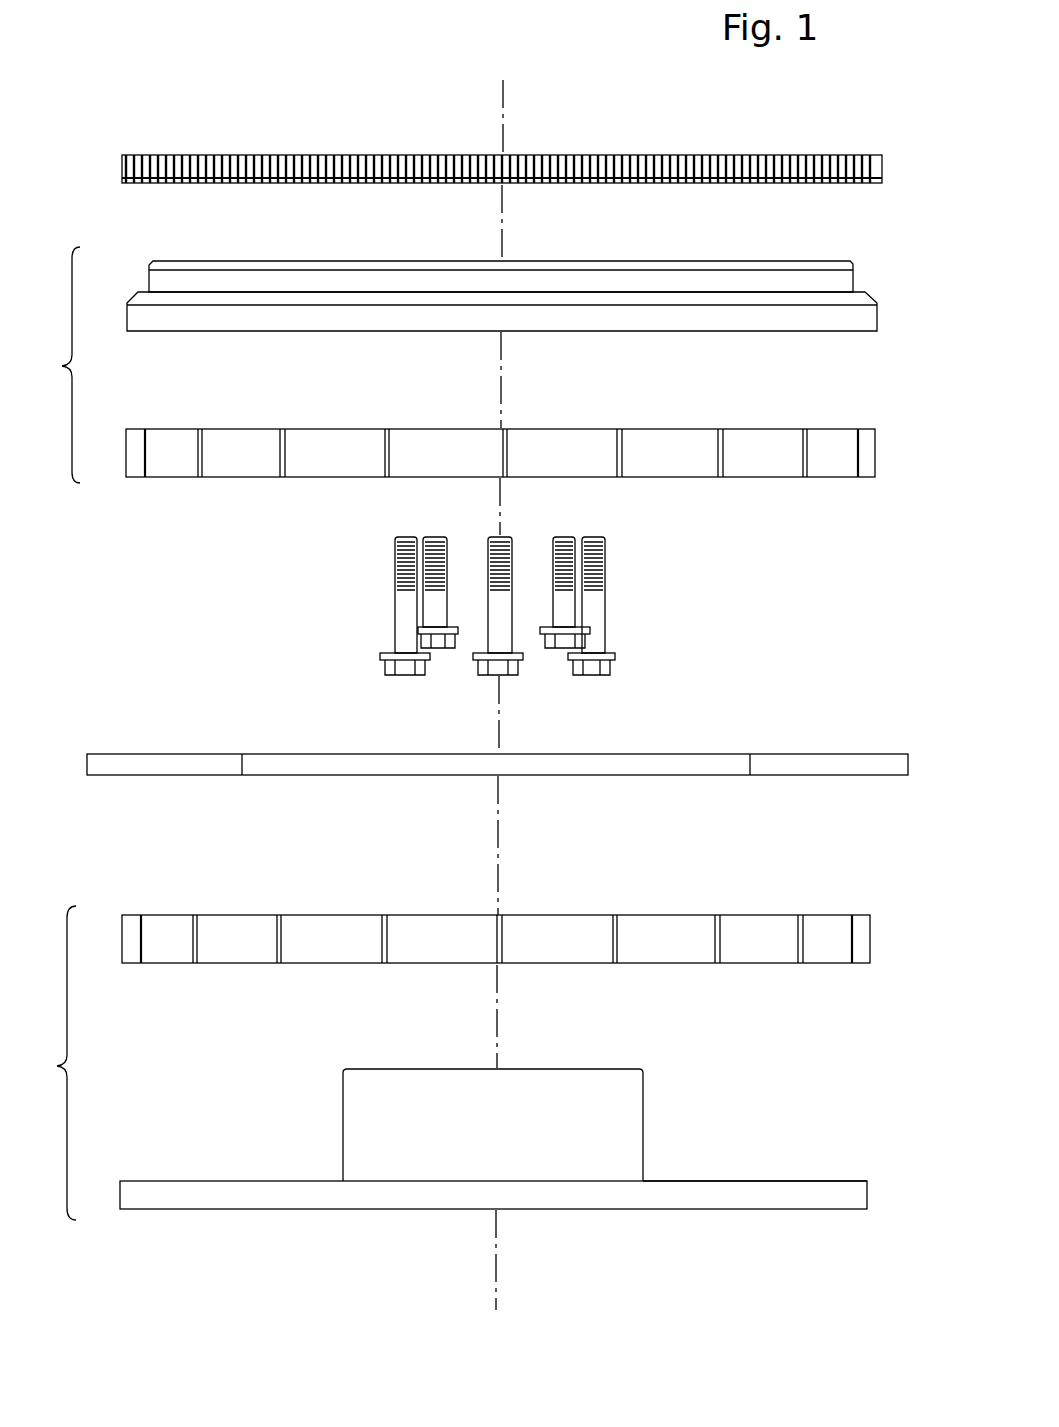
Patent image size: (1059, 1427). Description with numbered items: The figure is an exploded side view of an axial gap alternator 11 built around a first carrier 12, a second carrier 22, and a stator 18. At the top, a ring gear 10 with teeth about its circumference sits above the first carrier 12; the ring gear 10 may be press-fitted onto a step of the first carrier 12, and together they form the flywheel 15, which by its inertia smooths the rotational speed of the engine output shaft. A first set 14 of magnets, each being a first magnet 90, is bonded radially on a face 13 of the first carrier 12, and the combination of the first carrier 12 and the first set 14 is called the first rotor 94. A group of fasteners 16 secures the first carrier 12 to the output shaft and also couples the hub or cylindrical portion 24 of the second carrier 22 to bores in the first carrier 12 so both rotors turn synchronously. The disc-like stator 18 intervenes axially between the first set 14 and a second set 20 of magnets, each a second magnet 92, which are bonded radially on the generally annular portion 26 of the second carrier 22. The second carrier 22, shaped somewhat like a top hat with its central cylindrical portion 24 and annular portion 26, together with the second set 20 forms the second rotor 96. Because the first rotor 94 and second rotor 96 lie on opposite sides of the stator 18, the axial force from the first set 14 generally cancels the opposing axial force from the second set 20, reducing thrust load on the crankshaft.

The ring gear 10 is at (698, 157).
The axial gap alternator 11 is at (172, 642).
The first carrier 12 is at (630, 261).
The face 13 is at (830, 331).
The first set of magnets 14 is at (659, 425).
The flywheel 15 is at (773, 185).
The fasteners 16 is at (632, 603).
The stator 18 is at (700, 754).
The second set of magnets 20 is at (694, 915).
The second carrier 22 is at (607, 1068).
The cylindrical portion 24 is at (640, 1107).
The annular portion 26 is at (712, 1181).
The first magnet 90 is at (240, 471).
The second magnet 92 is at (647, 928).
The first rotor 94 is at (50, 365).
The second rotor 96 is at (44, 1063).